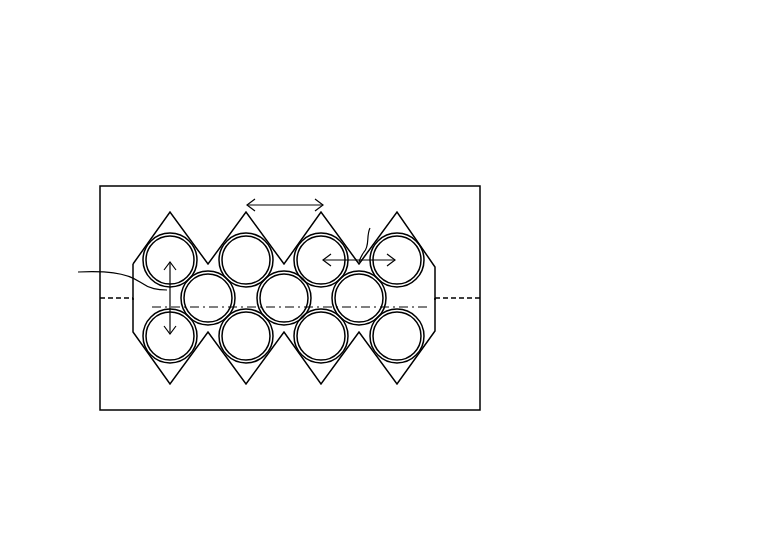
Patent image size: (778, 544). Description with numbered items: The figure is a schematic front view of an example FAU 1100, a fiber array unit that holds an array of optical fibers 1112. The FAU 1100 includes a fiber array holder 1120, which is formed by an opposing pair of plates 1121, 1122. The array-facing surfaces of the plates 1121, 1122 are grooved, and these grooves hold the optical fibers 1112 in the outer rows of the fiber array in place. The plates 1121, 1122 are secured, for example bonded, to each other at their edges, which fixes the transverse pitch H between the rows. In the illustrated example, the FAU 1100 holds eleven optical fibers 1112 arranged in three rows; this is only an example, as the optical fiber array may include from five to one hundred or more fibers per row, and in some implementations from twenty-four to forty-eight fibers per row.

The FAU 1100 is at (316, 76).
The optical fibers 1112 is at (400, 233).
The fiber array holder 1120 is at (481, 245).
The plate 1121 is at (164, 218).
The plate 1122 is at (164, 403).